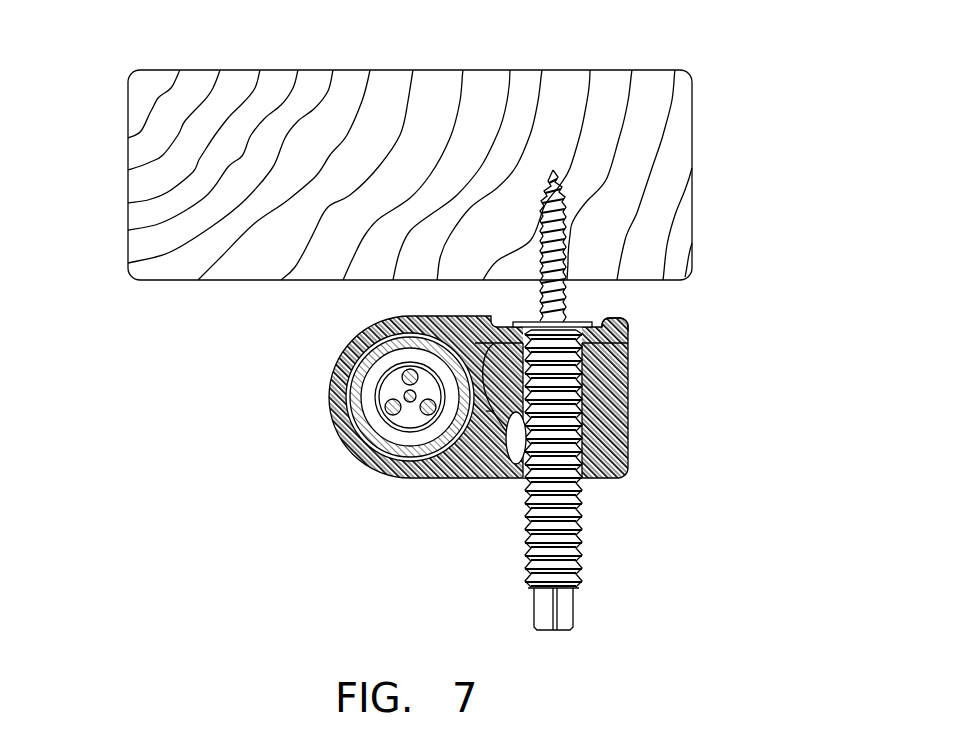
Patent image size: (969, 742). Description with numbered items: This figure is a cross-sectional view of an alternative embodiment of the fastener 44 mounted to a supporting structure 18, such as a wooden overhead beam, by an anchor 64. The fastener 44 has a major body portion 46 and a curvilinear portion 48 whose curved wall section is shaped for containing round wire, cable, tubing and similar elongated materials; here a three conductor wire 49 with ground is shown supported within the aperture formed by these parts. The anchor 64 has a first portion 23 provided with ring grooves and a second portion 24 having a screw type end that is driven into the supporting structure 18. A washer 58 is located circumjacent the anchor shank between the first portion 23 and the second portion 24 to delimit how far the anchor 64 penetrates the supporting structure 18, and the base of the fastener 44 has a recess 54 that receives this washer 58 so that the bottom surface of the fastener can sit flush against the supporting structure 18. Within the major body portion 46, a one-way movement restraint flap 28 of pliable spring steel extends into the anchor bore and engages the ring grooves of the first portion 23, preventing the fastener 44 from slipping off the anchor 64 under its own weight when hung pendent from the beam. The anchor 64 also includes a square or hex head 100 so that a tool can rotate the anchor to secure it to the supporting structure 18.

The supporting structure 18 is at (237, 70).
The fastener 44 is at (740, 42).
The second portion 24 is at (540, 288).
The washer 58 is at (574, 320).
The recess 54 is at (604, 325).
The major body portion 46 is at (628, 400).
The three conductor wire 49 is at (380, 386).
The curvilinear portion 48 is at (356, 447).
The one-way movement restraint flap 28 is at (514, 464).
The anchor 64 is at (577, 520).
The first portion 23 is at (578, 557).
The hex head 100 is at (573, 631).